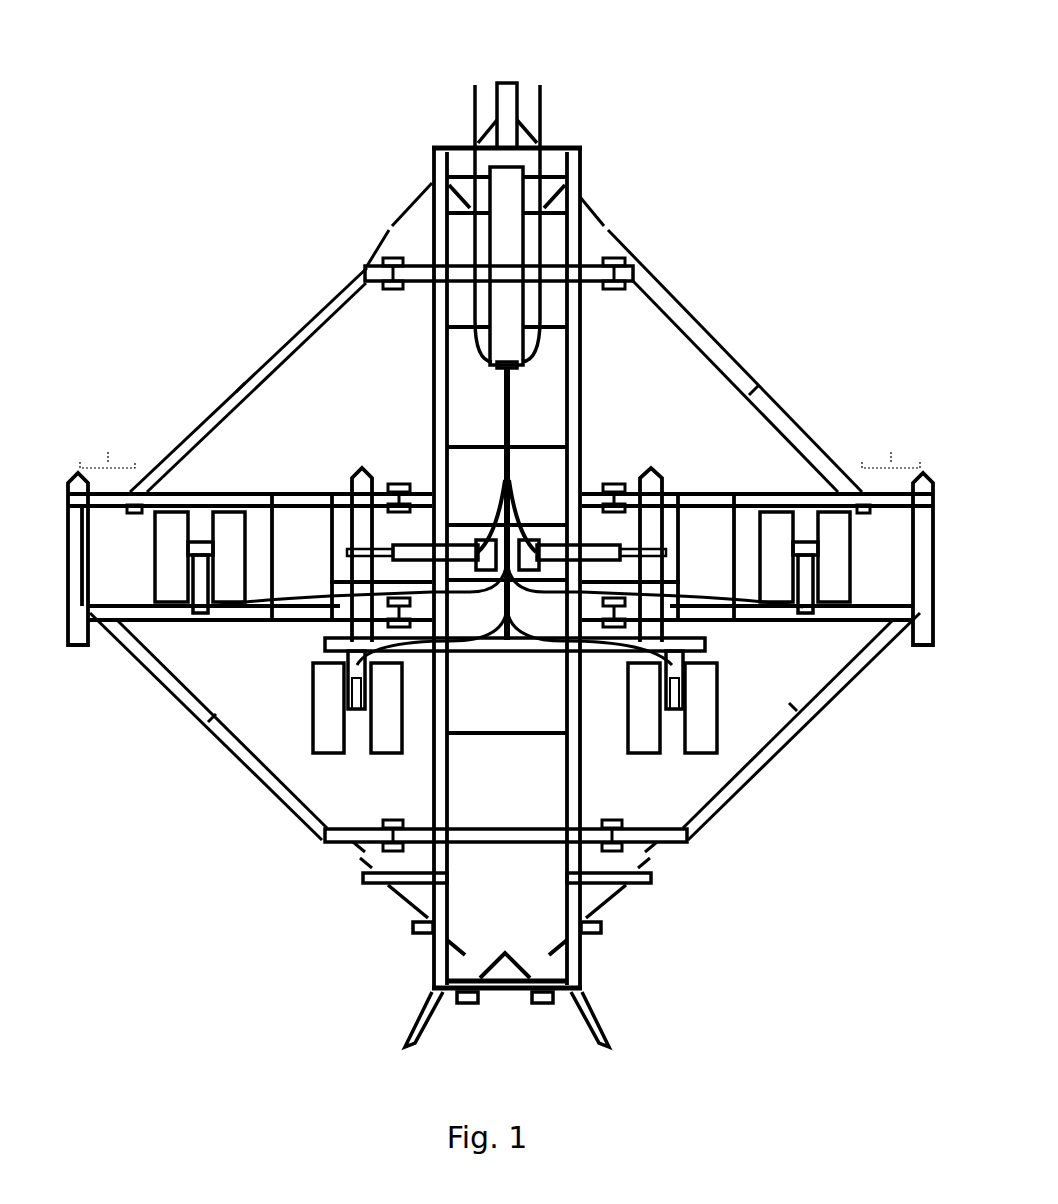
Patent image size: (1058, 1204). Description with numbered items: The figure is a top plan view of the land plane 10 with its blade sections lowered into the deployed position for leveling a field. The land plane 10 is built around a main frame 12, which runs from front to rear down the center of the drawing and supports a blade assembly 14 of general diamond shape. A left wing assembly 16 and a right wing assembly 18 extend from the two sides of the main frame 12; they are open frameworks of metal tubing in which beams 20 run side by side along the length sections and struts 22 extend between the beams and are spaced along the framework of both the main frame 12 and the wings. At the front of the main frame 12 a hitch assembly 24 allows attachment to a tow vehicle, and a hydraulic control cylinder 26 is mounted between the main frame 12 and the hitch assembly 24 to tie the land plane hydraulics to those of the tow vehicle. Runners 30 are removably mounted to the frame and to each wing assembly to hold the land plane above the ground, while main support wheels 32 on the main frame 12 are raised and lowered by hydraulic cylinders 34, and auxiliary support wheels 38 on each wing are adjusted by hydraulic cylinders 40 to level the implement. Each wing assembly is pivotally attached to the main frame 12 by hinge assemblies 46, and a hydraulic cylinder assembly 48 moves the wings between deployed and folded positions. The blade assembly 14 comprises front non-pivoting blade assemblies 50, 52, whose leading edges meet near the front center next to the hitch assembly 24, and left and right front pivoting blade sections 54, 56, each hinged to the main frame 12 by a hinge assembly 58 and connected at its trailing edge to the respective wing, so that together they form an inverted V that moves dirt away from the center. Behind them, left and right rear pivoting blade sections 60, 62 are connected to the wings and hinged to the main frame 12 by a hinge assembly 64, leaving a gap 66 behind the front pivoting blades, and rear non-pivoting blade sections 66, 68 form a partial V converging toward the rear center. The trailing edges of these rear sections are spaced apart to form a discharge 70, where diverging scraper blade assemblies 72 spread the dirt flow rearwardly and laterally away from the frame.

The land plane 10 is at (243, 126).
The main frame 12 is at (452, 145).
The blade assembly 14 is at (712, 254).
The left wing assembly 16 is at (257, 490).
The right wing assembly 18 is at (718, 490).
The beams 20 is at (433, 172).
The struts 22 is at (413, 288).
The hitch assembly 24 is at (522, 112).
The hydraulic control cylinder 26 is at (507, 222).
The runners 30 is at (77, 470).
The main support wheels 32 is at (312, 694).
The hydraulic cylinders 34 is at (357, 690).
The auxiliary support wheels 38 is at (156, 557).
The hydraulic cylinders 40 is at (200, 613).
The hinge assemblies 46 is at (402, 597).
The hydraulic cylinder assembly 48 is at (437, 550).
The left front non-pivoting blade assembly 50 is at (405, 205).
The right front non-pivoting blade assembly 52 is at (590, 198).
The left front pivoting blade section 54 is at (276, 339).
The right front pivoting blade section 56 is at (730, 352).
The hinge assembly 58 is at (383, 260).
The left rear pivoting blade section 60 is at (245, 742).
The right rear pivoting blade section 62 is at (766, 742).
The hinge assembly 64 is at (380, 842).
The gap / left rear non-pivoting blade section 66 is at (350, 950).
The right rear non-pivoting blade section 68 is at (618, 898).
The discharge 70 is at (536, 952).
The diverging scraper blade assemblies 72 is at (570, 1018).